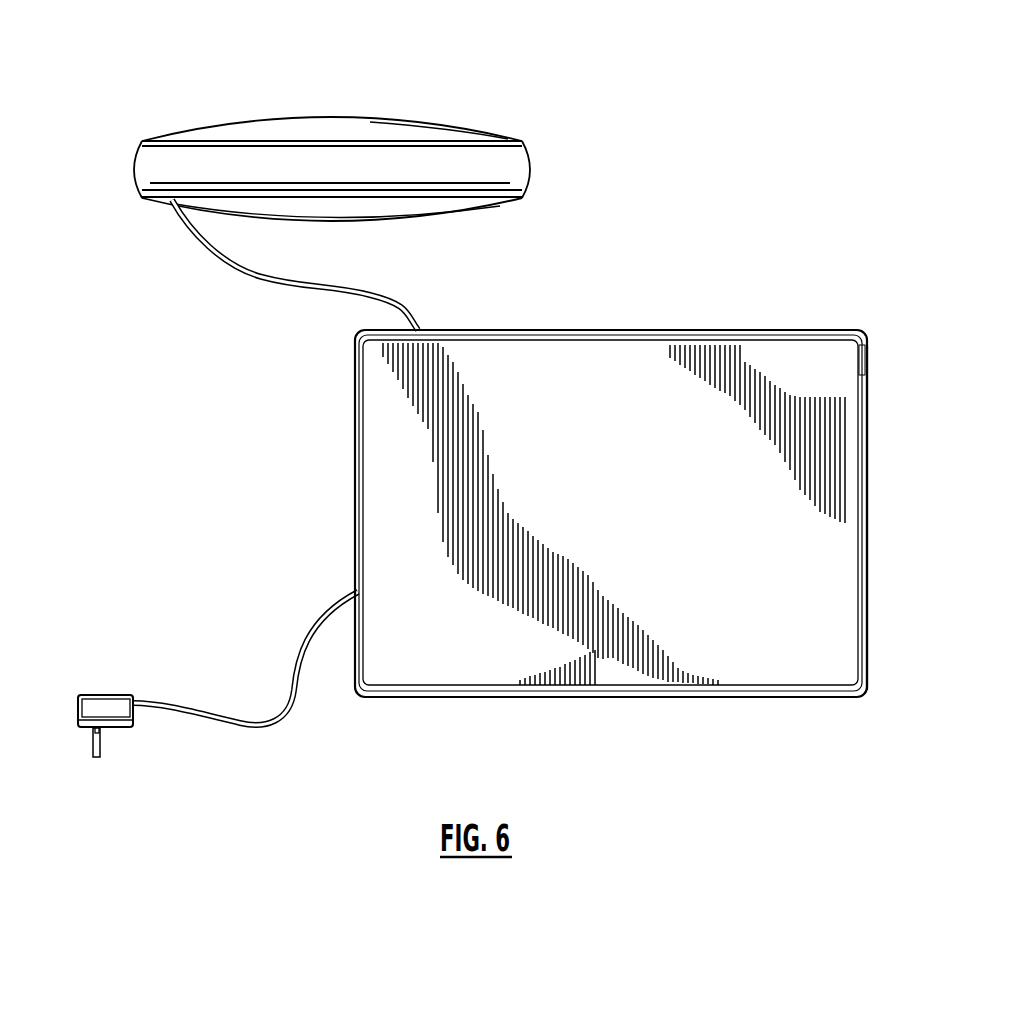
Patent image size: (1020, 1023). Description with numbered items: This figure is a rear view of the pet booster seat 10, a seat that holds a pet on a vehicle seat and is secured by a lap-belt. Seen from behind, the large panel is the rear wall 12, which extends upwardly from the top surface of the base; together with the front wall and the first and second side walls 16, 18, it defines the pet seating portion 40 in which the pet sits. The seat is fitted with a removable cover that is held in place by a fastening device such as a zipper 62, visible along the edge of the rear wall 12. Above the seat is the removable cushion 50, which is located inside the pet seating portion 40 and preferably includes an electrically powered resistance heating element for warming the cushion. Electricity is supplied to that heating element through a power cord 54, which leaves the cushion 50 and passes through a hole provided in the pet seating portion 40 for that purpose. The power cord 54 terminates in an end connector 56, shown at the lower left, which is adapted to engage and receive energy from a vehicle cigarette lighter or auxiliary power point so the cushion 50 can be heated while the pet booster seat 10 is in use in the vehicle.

The pet booster seat 10 is at (571, 124).
The removable cushion 50 is at (302, 117).
The power cord 54 is at (243, 278).
The pet seating portion 40 is at (214, 410).
The rear wall 12 is at (395, 514).
The second side wall 18 is at (357, 483).
The first side wall 16 is at (866, 505).
The zipper 62 is at (720, 692).
The end connector 56 is at (122, 695).